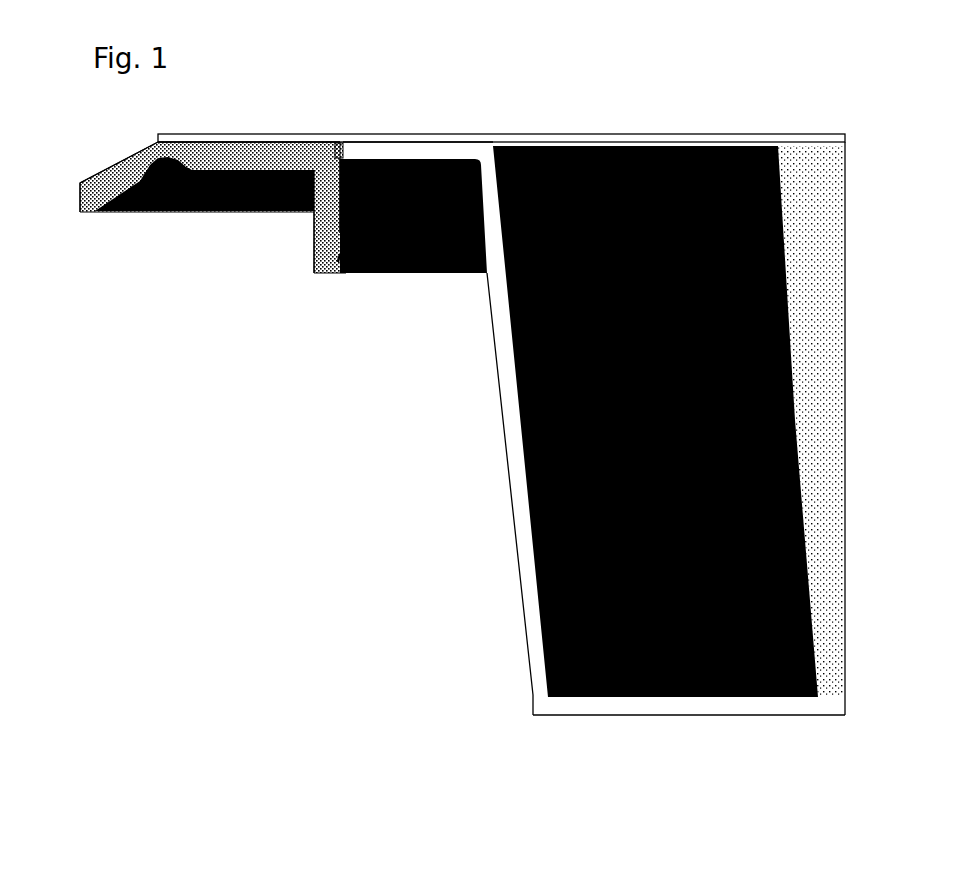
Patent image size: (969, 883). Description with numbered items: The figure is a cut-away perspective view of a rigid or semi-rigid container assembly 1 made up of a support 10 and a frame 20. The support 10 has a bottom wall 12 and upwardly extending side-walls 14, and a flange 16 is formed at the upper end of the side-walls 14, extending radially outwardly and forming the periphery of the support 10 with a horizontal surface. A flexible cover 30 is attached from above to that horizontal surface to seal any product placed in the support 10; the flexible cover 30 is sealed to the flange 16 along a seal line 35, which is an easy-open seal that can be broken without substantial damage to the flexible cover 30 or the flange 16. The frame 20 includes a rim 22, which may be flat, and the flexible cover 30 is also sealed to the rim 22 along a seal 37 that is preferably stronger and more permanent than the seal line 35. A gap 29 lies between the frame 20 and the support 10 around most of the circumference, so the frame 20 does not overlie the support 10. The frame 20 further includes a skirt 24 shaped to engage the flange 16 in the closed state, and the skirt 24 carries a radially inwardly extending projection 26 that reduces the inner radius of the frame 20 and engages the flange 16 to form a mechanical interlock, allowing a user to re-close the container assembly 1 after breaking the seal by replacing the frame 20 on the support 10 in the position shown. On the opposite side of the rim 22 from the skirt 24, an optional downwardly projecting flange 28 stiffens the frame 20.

The container assembly 1 is at (182, 452).
The support 10 is at (418, 549).
The bottom wall 12 is at (637, 708).
The side-walls 14 is at (508, 357).
The flange 16 is at (409, 152).
The frame 20 is at (172, 252).
The rim 22 is at (217, 150).
The skirt 24 is at (315, 228).
The projection 26 is at (347, 246).
The downwardly projecting flange 28 is at (105, 172).
The gap 29 is at (343, 145).
The flexible cover 30 is at (600, 136).
The seal line 35 is at (414, 142).
The seal 37 is at (247, 142).